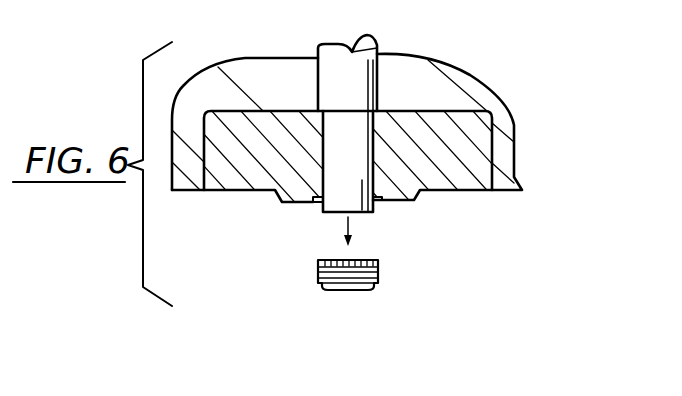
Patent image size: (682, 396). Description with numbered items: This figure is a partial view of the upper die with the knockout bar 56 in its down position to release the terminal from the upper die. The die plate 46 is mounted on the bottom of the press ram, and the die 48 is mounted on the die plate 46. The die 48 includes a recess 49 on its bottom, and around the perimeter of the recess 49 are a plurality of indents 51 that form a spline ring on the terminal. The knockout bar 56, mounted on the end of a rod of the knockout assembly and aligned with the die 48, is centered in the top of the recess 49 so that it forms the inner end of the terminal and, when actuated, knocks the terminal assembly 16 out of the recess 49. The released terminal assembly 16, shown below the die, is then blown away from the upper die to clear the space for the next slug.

The terminal assembly 16 is at (390, 280).
The die plate 46 is at (505, 168).
The die 48 is at (462, 118).
The recess 49 is at (380, 207).
The indents 51 is at (322, 208).
The knockout bar 56 is at (337, 128).